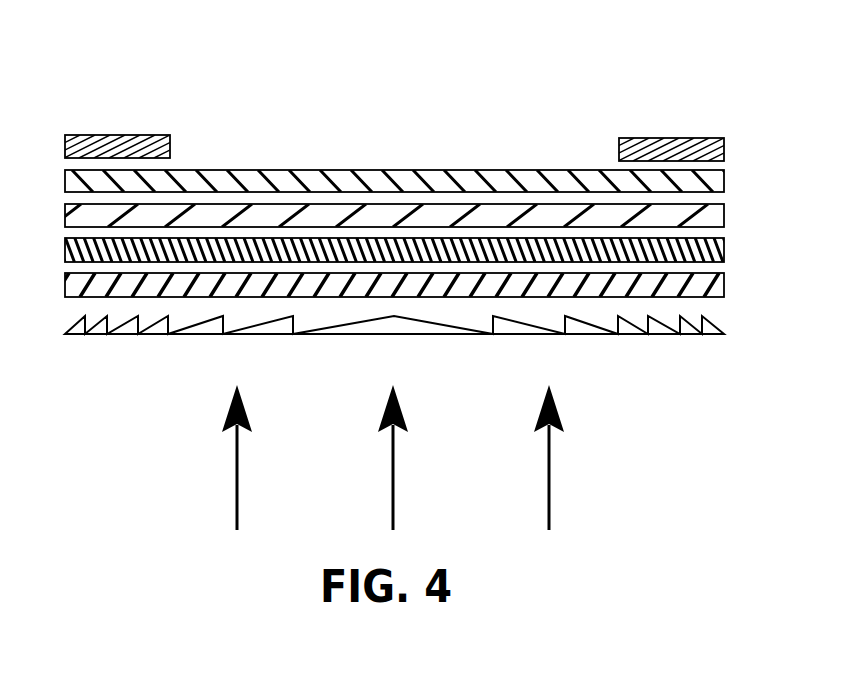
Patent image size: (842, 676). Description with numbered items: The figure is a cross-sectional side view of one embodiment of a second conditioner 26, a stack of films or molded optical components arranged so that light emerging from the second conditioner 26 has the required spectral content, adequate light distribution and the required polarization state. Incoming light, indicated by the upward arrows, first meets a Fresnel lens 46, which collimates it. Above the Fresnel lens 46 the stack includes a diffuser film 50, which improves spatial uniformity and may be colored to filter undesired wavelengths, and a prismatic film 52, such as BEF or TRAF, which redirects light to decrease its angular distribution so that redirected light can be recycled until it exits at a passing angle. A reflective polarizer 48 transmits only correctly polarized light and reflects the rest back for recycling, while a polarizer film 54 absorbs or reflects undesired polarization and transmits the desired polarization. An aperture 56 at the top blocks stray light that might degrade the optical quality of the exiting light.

The second conditioner 26 is at (482, 92).
The Fresnel lens 46 is at (724, 333).
The reflective polarizer 48 is at (65, 220).
The diffuser film 50 is at (65, 288).
The prismatic film 52 is at (724, 255).
The polarizer film 54 is at (724, 182).
The aperture 56 is at (581, 145).